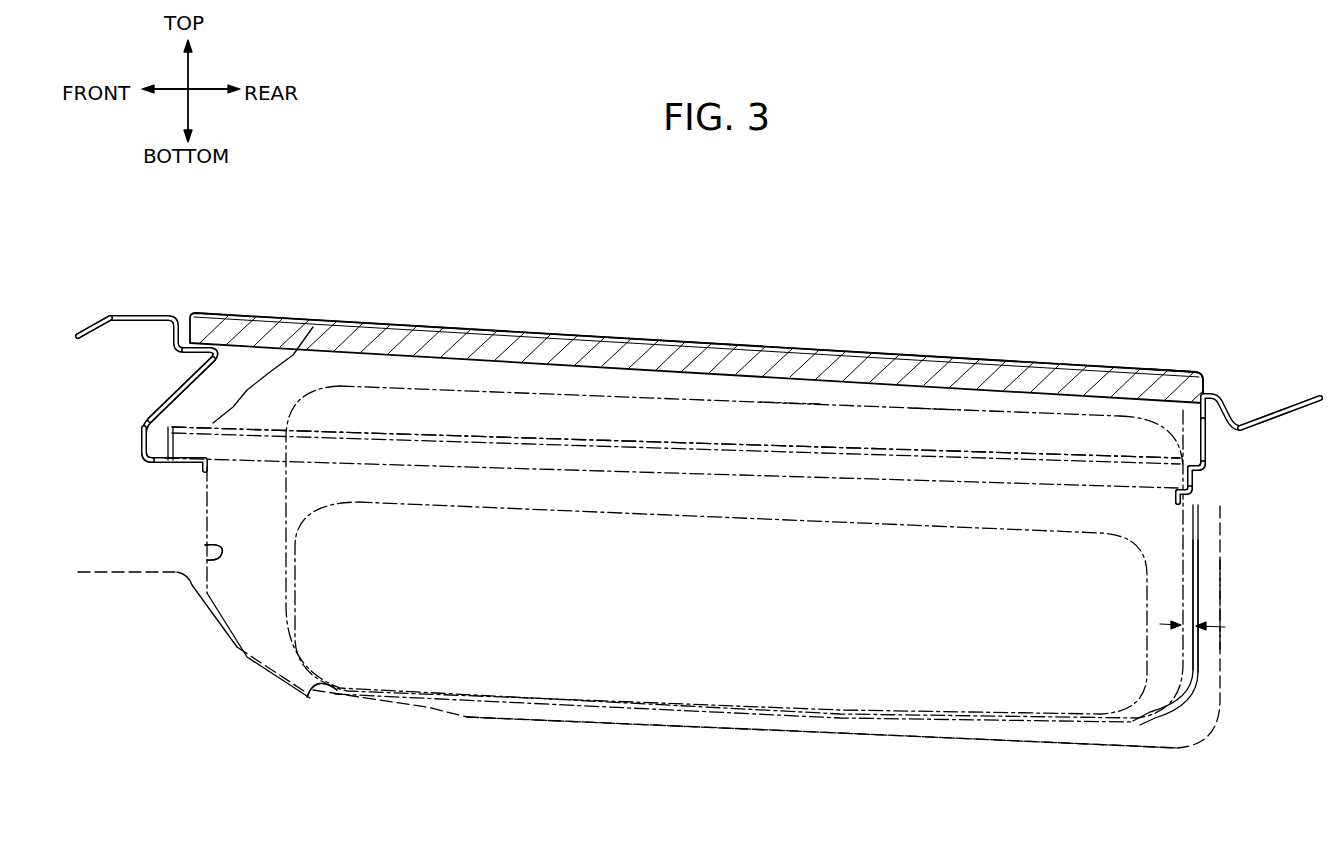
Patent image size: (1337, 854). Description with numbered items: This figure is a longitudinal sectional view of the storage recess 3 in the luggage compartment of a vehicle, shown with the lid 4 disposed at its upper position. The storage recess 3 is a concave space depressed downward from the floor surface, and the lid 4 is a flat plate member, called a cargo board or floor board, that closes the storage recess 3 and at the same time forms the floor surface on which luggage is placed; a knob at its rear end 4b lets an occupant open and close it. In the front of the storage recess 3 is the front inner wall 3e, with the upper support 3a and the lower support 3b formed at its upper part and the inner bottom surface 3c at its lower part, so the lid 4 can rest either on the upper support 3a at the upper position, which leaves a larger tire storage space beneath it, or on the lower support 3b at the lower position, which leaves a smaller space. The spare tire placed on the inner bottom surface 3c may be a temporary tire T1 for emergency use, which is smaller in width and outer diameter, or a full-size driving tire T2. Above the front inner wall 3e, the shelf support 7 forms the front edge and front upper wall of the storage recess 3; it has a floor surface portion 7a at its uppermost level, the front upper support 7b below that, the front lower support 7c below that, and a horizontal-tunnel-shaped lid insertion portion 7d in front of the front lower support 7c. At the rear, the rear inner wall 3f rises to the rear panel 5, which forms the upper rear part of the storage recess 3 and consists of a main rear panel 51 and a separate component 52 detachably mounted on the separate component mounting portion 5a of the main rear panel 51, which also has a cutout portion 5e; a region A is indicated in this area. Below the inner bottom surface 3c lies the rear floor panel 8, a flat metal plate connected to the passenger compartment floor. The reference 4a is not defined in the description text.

The storage recess 3 is at (230, 610).
The upper support 3a is at (676, 442).
The lower support 3b is at (263, 375).
The inner bottom surface 3c is at (310, 700).
The front inner wall 3e is at (200, 545).
The rear inner wall 3f is at (1190, 578).
The lid 4 is at (577, 333).
The upper surface of sound insulating material 4a is at (313, 327).
The rear end 4b is at (1080, 360).
The rear panel 5 is at (1238, 405).
The separate component mounting portion 5a is at (1204, 446).
The cutout portion 5e is at (1197, 477).
The main rear panel 51 is at (1273, 398).
The separate component 52 is at (1195, 500).
The shelf support 7 is at (150, 318).
The floor surface portion 7a is at (120, 316).
The front upper support 7b is at (203, 340).
The front lower support 7c is at (210, 427).
The lid insertion portion 7d is at (150, 437).
The rear floor panel 8 is at (688, 723).
The temporary tire T1 is at (780, 520).
The driving tire T2 is at (934, 412).
The region A is at (1198, 677).